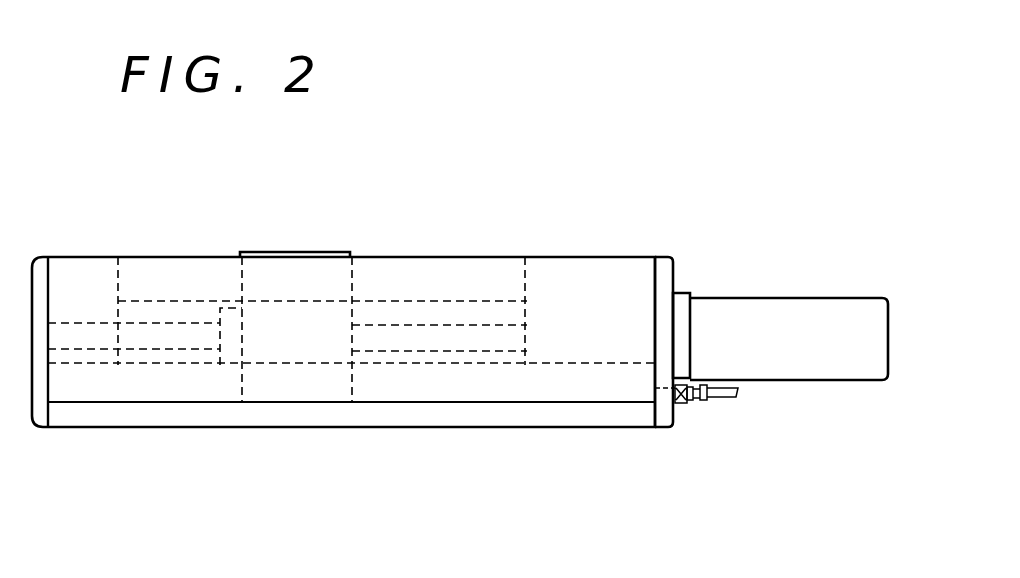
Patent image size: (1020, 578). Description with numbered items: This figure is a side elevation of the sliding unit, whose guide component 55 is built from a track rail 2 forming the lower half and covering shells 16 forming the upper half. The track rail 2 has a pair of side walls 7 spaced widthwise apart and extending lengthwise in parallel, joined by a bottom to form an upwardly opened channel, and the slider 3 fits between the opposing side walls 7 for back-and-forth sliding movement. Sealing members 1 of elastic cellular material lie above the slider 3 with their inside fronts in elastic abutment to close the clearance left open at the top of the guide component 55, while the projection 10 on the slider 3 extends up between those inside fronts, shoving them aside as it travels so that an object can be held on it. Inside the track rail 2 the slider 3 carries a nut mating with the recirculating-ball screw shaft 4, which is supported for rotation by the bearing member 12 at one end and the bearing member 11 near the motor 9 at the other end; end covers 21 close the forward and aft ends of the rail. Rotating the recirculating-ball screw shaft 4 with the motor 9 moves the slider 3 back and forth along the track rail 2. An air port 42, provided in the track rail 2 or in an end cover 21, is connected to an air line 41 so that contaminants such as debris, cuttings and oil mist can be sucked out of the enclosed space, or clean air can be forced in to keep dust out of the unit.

The sealing members 1 is at (168, 258).
The track rail 2 is at (193, 422).
The slider 3 is at (272, 325).
The recirculating-ball screw shaft 4 is at (182, 340).
The side walls 7 is at (434, 388).
The motor 9 is at (808, 330).
The projection 10 is at (300, 284).
The bearing member 11 is at (595, 290).
The bearing member 12 is at (82, 297).
The covering shell 16 is at (408, 275).
The end cover 21 is at (40, 398).
The air line 41 is at (722, 397).
The air port 42 is at (667, 387).
The guide component 55 is at (533, 433).